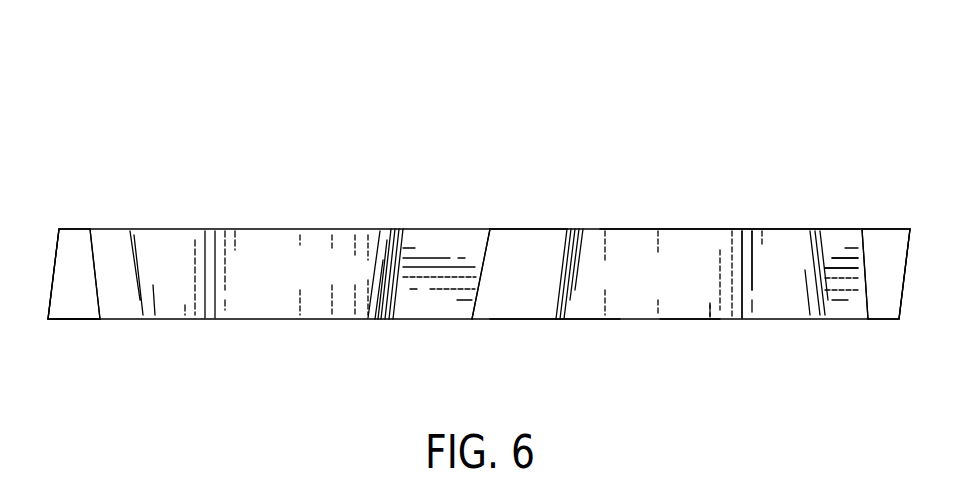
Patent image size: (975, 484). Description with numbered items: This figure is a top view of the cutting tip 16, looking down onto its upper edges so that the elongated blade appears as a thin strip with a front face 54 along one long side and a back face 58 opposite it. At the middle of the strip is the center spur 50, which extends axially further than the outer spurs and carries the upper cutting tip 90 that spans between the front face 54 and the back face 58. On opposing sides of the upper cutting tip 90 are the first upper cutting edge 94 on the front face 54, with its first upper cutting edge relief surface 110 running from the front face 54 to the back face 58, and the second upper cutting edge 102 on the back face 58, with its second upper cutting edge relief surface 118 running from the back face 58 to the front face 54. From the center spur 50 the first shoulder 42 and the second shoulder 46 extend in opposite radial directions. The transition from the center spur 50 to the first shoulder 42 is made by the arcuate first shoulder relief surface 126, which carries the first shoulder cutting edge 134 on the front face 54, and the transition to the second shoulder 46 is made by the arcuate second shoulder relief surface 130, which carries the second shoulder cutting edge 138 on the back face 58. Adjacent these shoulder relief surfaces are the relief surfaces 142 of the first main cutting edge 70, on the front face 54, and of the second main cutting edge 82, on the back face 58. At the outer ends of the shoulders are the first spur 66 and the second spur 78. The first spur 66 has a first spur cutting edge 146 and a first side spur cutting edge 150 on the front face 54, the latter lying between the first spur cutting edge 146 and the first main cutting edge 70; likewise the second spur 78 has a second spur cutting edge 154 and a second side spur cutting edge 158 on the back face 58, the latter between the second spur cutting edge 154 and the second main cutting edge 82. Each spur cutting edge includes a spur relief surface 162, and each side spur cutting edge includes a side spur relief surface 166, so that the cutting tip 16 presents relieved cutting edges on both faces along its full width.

The cutting tip 16 is at (378, 64).
The first shoulder 42 is at (270, 148).
The second shoulder 46 is at (680, 148).
The center spur 50 is at (505, 148).
The front face 54 is at (676, 336).
The back face 58 is at (330, 196).
The first spur 66 is at (68, 148).
The first main cutting edge 70 is at (256, 320).
The second spur 78 is at (882, 148).
The second main cutting edge 82 is at (733, 230).
The upper cutting tip 90 is at (488, 244).
The first upper cutting edge 94 is at (437, 320).
The second upper cutting edge 102 is at (546, 230).
The first upper cutting edge relief surface 110 is at (440, 242).
The second upper cutting edge relief surface 118 is at (514, 303).
The first shoulder relief surface 126 is at (383, 250).
The second shoulder relief surface 130 is at (585, 303).
The first shoulder cutting edge 134 is at (375, 320).
The second shoulder cutting edge 138 is at (600, 230).
The relief surface 142 is at (173, 253).
The first spur cutting edge 146 is at (69, 320).
The first side spur cutting edge 150 is at (120, 320).
The second spur cutting edge 154 is at (877, 228).
The second side spur cutting edge 158 is at (833, 230).
The spur relief surface 162 is at (70, 247).
The side spur relief surface 166 is at (112, 255).